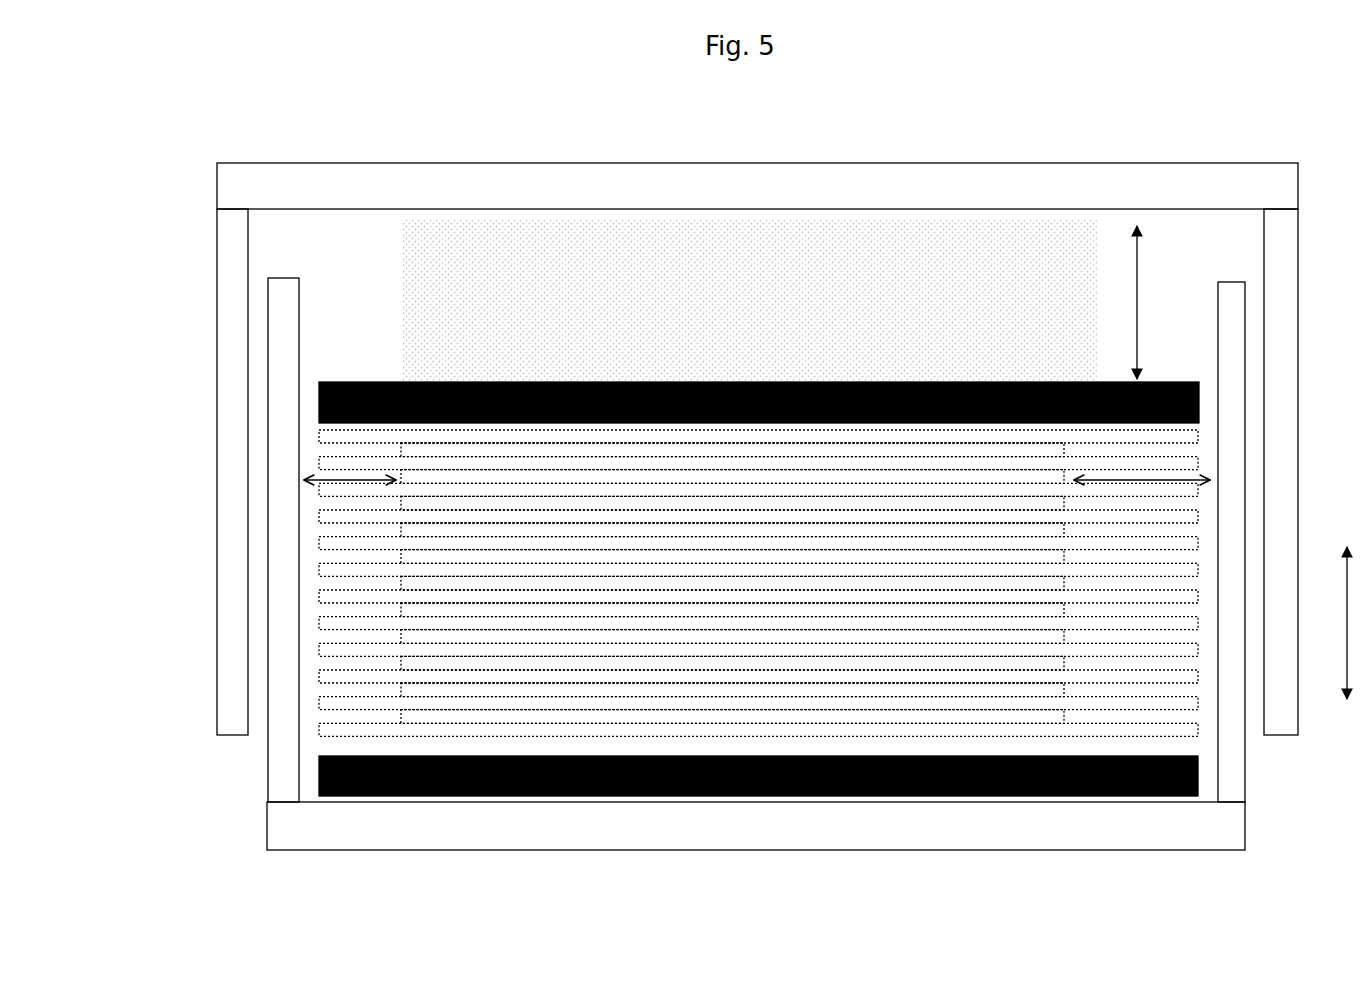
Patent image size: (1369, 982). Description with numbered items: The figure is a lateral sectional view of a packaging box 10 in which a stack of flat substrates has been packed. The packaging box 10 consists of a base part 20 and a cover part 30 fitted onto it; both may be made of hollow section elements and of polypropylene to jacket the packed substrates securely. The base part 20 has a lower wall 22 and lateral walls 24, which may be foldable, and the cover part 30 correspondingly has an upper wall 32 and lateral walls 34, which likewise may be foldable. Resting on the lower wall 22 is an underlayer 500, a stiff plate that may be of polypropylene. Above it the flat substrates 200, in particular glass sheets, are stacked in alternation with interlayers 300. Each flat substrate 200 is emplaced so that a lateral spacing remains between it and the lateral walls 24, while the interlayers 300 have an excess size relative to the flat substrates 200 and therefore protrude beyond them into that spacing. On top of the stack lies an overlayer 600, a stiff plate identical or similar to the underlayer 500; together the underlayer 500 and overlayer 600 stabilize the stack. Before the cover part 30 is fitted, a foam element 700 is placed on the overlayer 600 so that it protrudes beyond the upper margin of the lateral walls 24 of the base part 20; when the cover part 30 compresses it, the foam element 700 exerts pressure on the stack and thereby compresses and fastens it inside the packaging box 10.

The packaging box 10 is at (108, 887).
The base part 20 is at (262, 806).
The lower wall 22 is at (746, 832).
The lateral walls 24 is at (280, 768).
The cover part 30 is at (215, 208).
The upper wall 32 is at (760, 180).
The lateral walls 34 is at (225, 483).
The flat substrate 200 is at (393, 695).
The interlayer 300 is at (318, 673).
The underlayer 500 is at (565, 796).
The overlayer 600 is at (319, 400).
The foam element 700 is at (910, 290).